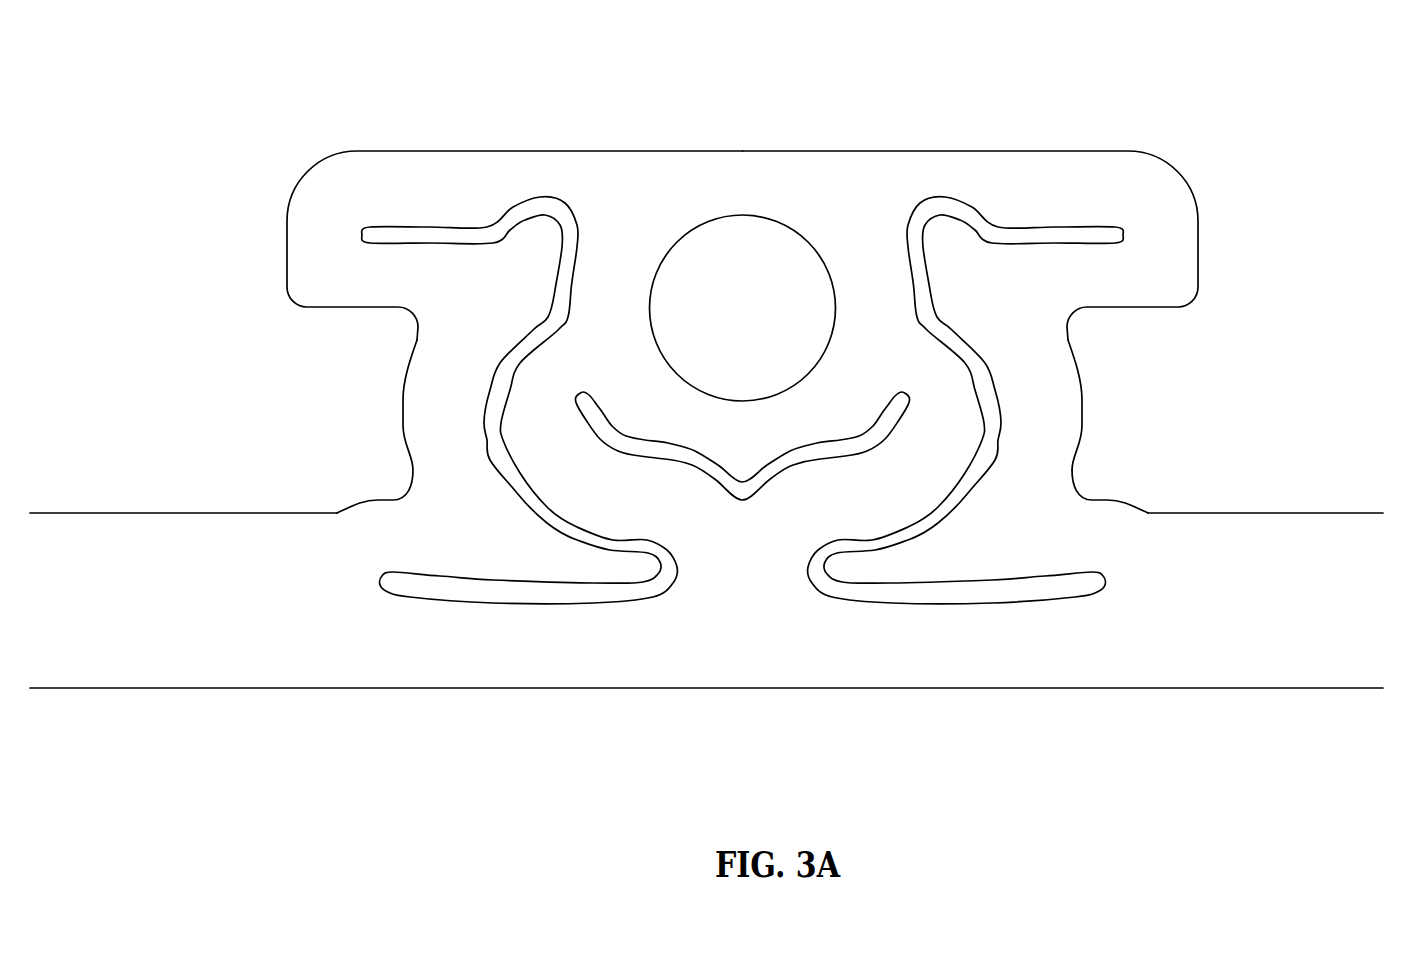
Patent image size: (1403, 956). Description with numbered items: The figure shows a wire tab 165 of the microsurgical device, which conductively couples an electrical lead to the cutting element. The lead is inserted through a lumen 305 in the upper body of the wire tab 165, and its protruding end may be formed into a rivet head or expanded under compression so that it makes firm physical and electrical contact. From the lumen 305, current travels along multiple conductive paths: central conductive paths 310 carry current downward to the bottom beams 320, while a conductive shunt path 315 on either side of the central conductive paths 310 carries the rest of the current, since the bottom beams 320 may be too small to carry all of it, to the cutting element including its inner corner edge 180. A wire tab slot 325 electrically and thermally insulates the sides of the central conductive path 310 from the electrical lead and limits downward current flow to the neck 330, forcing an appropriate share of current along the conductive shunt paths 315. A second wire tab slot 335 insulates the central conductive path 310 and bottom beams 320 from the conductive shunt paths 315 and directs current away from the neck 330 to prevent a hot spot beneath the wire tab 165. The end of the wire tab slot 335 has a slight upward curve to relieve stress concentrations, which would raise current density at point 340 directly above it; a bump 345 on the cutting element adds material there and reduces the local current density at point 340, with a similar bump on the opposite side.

The wire tab 165 is at (183, 28).
The lumen 305 is at (743, 308).
The central conductive paths 310 is at (947, 423).
The conductive shunt path 315 is at (1037, 463).
The bottom beams 320 is at (935, 645).
The wire tab slot 325 is at (578, 410).
The neck 330 is at (737, 573).
The wire tab slot 335 is at (500, 467).
The point 340 is at (1117, 490).
The bump 345 is at (368, 500).
The inner corner edge 180 is at (1255, 690).